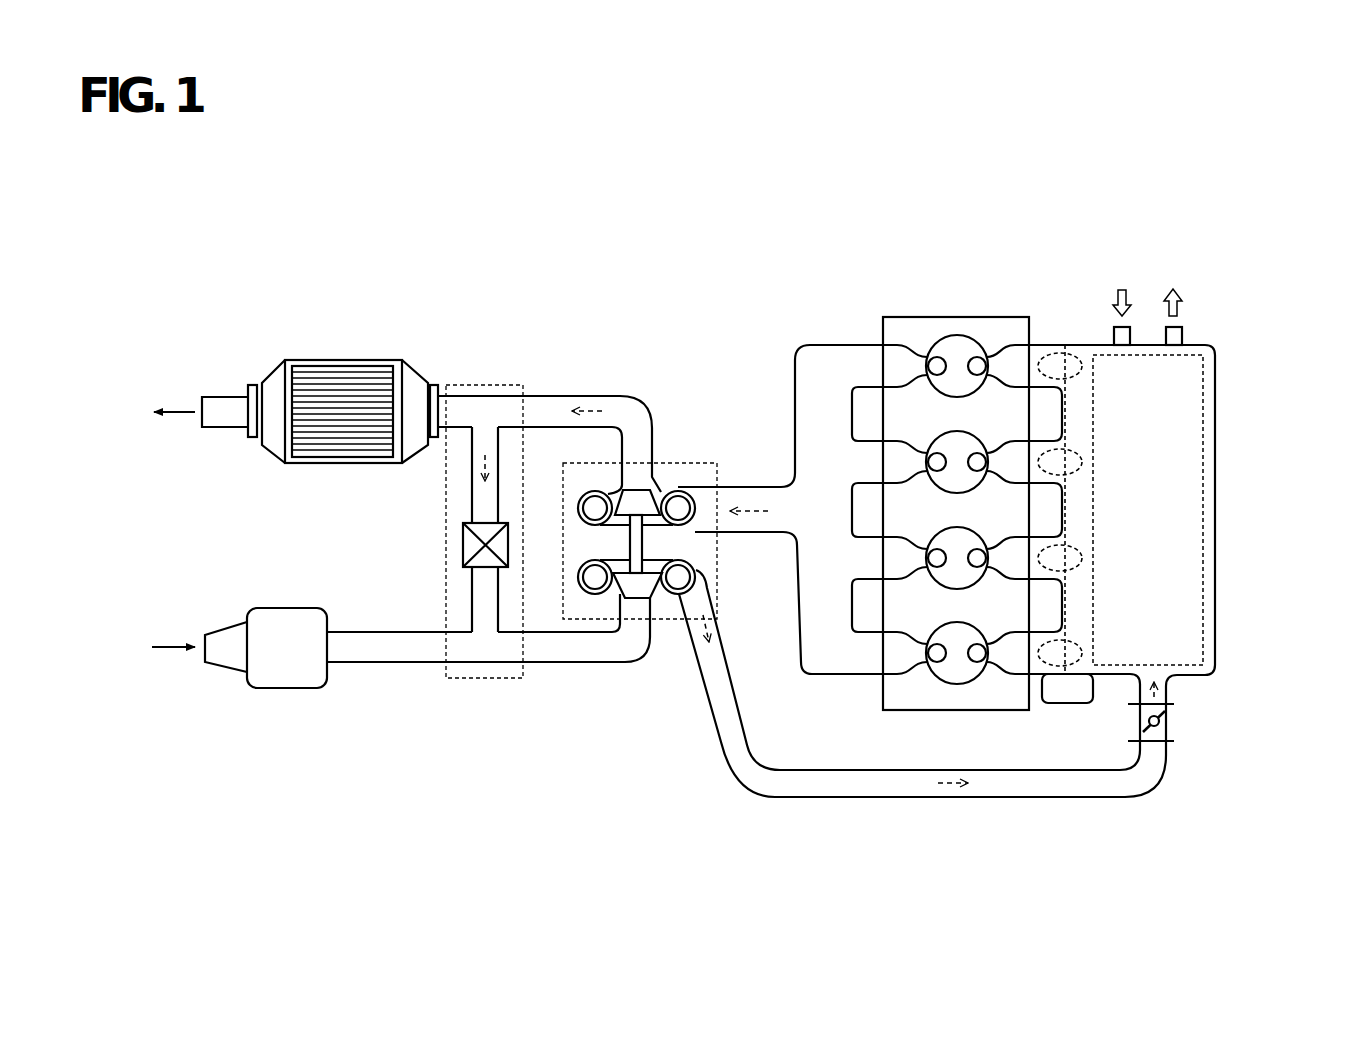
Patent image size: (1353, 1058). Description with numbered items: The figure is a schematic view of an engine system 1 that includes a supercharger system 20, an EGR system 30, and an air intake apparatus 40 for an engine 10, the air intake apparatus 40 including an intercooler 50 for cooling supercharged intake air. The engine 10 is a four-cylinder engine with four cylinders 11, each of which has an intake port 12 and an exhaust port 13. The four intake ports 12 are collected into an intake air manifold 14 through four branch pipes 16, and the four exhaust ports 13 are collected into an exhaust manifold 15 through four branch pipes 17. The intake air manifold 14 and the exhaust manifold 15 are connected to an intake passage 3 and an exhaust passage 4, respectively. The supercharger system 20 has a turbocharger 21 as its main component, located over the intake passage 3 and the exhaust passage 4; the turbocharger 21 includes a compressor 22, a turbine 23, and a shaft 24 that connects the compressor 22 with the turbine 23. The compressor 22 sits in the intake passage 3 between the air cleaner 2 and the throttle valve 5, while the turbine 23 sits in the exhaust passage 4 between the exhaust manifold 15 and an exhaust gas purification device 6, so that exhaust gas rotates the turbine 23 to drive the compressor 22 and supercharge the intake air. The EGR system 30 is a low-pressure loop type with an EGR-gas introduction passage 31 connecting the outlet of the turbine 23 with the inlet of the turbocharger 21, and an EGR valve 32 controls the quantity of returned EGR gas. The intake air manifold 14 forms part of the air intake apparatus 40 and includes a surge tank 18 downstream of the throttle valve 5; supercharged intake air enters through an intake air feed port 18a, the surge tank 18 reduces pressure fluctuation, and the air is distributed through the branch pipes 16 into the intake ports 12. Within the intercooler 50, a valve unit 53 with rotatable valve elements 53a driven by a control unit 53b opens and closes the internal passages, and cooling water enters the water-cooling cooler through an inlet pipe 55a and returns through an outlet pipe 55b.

The engine system 1 is at (670, 268).
The air cleaner 2 is at (290, 681).
The intake passage 3 is at (908, 798).
The exhaust passage 4 is at (565, 396).
The throttle valve 5 is at (1160, 725).
The exhaust gas purification device 6 is at (344, 360).
The engine 10 is at (886, 305).
The cylinder 11 is at (953, 336).
The intake port 12 is at (1013, 365).
The exhaust port 13 is at (906, 365).
The intake air manifold 14 is at (1079, 345).
The exhaust manifold 15 is at (795, 432).
The branch pipe 16 is at (1043, 350).
The branch pipe 17 is at (868, 368).
The surge tank 18 is at (1216, 701).
The intake air feed port 18a is at (1168, 692).
The supercharger system 20 is at (645, 563).
The turbocharger 21 is at (632, 623).
The compressor 22 is at (628, 590).
The turbine 23 is at (645, 505).
The shaft 24 is at (638, 545).
The EGR system 30 is at (476, 688).
The EGR-gas introduction passage 31 is at (472, 606).
The EGR valve 32 is at (462, 547).
The air intake apparatus 40 is at (1212, 460).
The intercooler 50 is at (1210, 432).
The valve unit 53 is at (1052, 612).
The valve element 53a is at (1042, 668).
The control unit 53b is at (1065, 695).
The inlet pipe 55a is at (1125, 330).
The outlet pipe 55b is at (1185, 330).